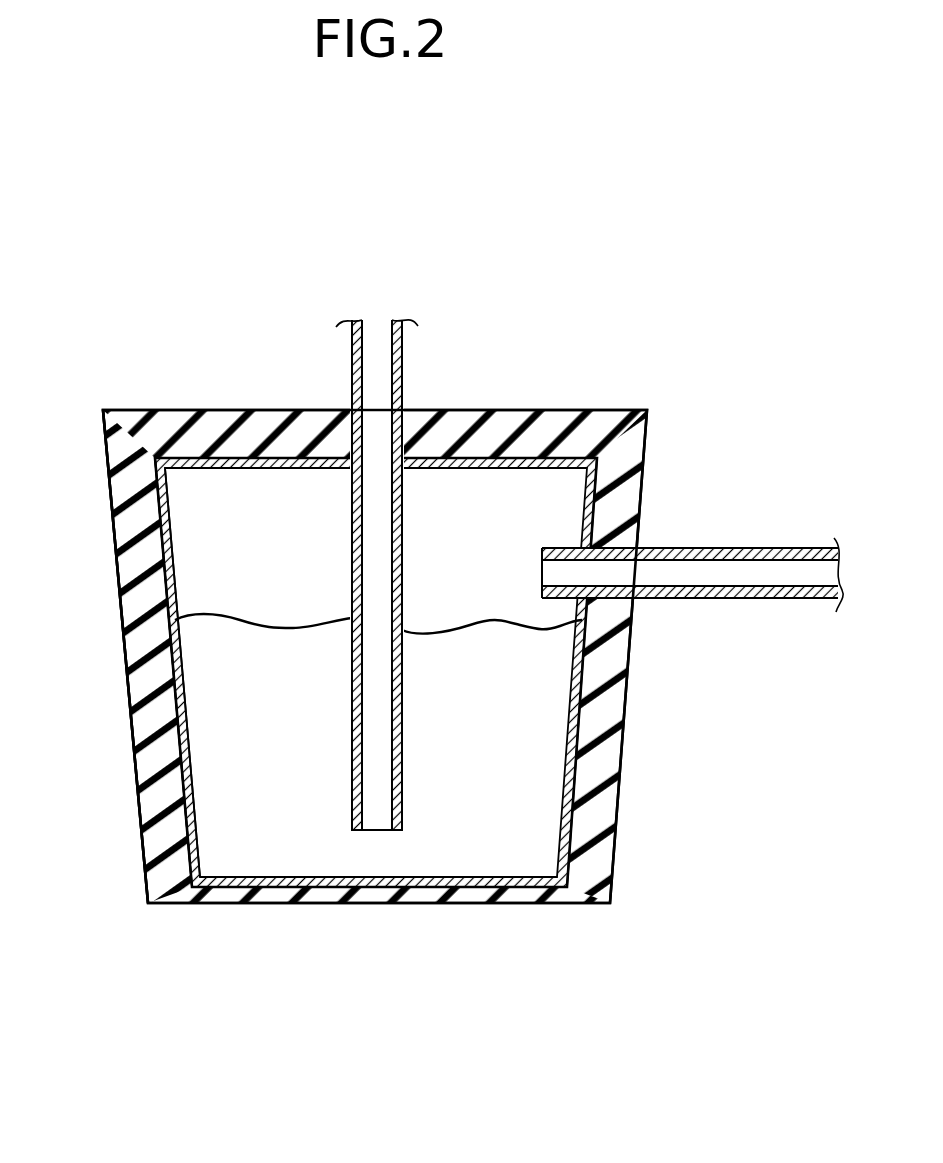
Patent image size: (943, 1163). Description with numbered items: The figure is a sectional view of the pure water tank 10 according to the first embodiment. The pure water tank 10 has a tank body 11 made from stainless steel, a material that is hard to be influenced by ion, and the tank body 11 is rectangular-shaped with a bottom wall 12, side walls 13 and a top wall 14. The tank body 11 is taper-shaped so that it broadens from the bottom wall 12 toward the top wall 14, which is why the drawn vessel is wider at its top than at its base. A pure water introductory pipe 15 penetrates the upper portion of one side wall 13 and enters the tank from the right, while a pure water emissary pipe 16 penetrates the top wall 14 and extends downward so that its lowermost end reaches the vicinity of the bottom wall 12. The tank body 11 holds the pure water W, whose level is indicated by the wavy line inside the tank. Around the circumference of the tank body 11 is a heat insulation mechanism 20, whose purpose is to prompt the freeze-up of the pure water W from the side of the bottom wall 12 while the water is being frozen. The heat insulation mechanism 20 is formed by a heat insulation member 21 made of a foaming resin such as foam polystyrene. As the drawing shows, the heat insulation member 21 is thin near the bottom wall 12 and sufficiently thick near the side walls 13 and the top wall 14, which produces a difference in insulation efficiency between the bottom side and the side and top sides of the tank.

The pure water tank 10 is at (621, 392).
The tank body 11 is at (184, 524).
The bottom wall 12 is at (330, 875).
The side walls 13 is at (196, 802).
The top wall 14 is at (253, 470).
The pure water introductory pipe 15 is at (764, 548).
The pure water emissary pipe 16 is at (405, 350).
The heat insulation mechanism 20 is at (157, 398).
The heat insulation member 21 is at (130, 712).
The pure water W is at (255, 618).